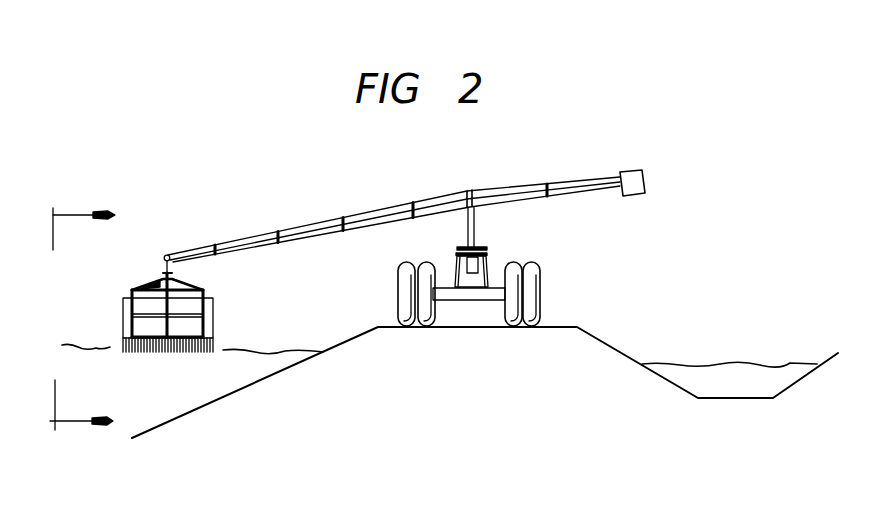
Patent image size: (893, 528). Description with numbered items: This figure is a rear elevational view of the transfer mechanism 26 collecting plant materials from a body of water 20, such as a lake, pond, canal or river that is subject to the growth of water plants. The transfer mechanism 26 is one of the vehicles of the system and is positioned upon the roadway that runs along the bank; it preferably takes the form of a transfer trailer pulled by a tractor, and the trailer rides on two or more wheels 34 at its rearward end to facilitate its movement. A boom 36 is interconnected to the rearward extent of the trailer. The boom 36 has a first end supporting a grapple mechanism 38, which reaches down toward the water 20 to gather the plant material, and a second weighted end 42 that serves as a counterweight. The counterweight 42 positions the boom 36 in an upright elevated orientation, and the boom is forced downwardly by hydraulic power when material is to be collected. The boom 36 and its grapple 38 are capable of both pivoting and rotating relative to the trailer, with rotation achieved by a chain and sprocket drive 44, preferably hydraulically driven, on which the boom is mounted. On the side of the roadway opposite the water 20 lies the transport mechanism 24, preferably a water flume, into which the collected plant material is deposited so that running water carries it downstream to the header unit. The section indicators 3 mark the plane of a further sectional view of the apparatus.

The section line 3- 3 is at (76, 320).
The body of water 20 is at (98, 350).
The transport mechanism 24 is at (730, 360).
The transfer mechanism 26 is at (432, 205).
The wheels 34 is at (537, 283).
The boom 36 is at (275, 227).
The grapple mechanism 38 is at (147, 282).
The weighted end 42 is at (643, 183).
The chain and sprocket drive 44 is at (487, 247).